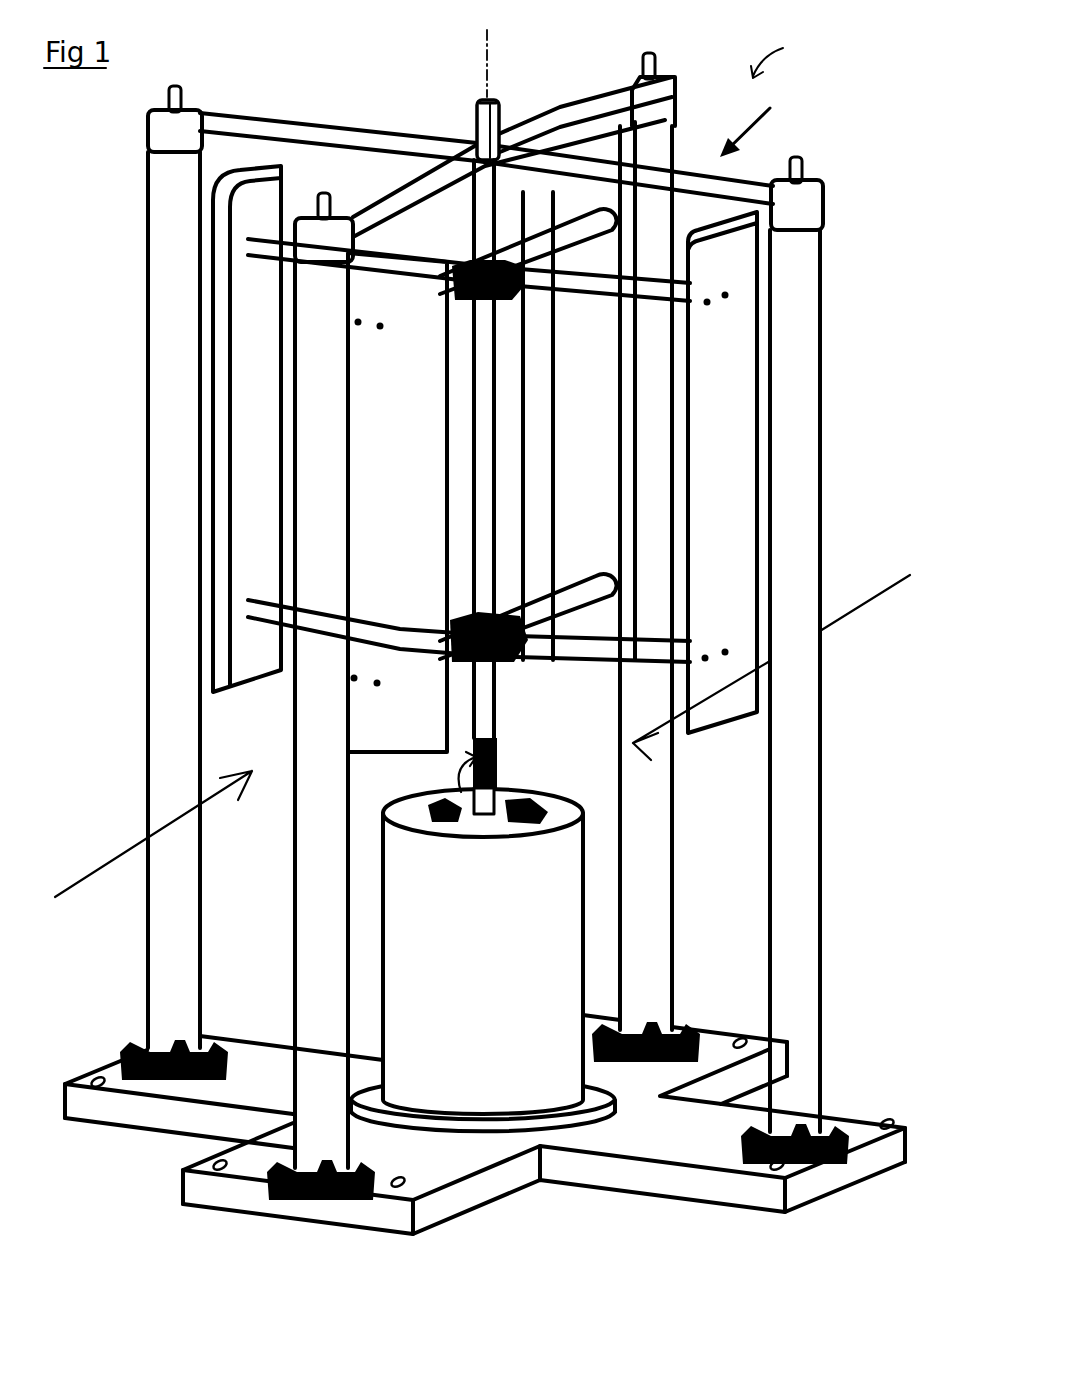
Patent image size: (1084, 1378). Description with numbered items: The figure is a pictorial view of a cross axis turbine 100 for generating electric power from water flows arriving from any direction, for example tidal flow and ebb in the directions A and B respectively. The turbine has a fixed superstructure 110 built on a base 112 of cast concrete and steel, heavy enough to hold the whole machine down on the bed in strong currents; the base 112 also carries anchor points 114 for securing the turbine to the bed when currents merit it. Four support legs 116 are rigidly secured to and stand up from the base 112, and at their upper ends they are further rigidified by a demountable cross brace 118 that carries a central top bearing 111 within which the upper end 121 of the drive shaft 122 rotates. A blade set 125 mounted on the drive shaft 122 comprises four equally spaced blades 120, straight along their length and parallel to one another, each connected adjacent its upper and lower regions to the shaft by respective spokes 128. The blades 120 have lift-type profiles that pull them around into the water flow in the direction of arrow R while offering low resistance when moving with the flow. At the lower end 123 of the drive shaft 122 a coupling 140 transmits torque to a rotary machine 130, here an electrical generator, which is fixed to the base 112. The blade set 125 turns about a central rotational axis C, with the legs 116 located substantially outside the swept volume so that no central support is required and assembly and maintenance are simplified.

The cross axis turbine 100 is at (793, 55).
The fixed superstructure 110 is at (828, 186).
The central top bearing 111 is at (474, 140).
The base 112 is at (577, 1165).
The anchor points 114 is at (62, 1090).
The support legs 116 is at (184, 478).
The demountable cross brace 118 is at (292, 128).
The blades 120 is at (272, 452).
The upper end of the drive shaft 121 is at (500, 125).
The drive shaft 122 is at (481, 100).
The lower end of the drive shaft 123 is at (497, 796).
The blade set 125 is at (773, 123).
The spokes 128 is at (469, 435).
The rotary machine 130 is at (487, 983).
The coupling 140 is at (470, 802).
The tidal flow direction A is at (153, 834).
The tidal ebb direction B is at (771, 665).
The central rotational axis C is at (490, 52).
The direction of rotation R is at (497, 762).